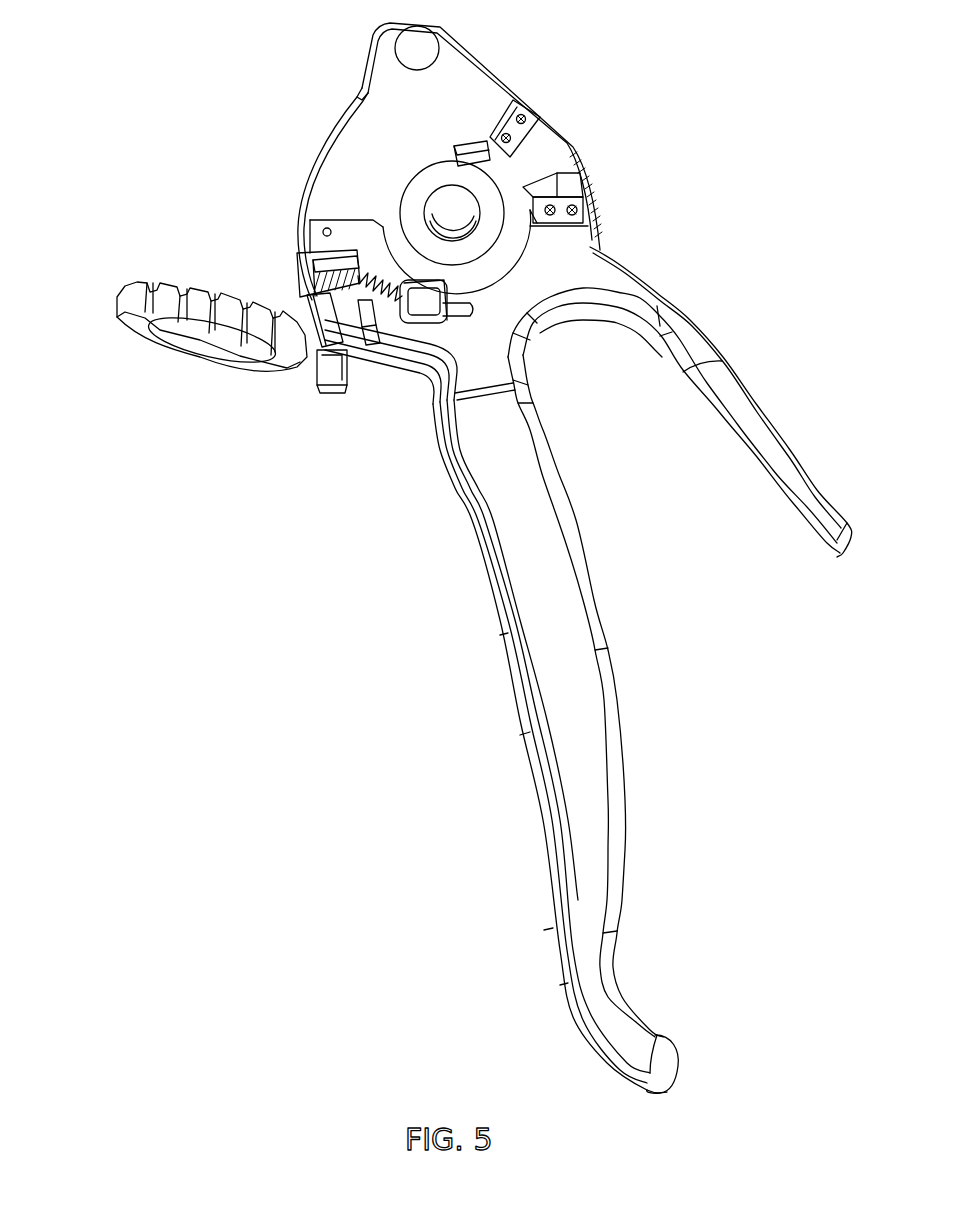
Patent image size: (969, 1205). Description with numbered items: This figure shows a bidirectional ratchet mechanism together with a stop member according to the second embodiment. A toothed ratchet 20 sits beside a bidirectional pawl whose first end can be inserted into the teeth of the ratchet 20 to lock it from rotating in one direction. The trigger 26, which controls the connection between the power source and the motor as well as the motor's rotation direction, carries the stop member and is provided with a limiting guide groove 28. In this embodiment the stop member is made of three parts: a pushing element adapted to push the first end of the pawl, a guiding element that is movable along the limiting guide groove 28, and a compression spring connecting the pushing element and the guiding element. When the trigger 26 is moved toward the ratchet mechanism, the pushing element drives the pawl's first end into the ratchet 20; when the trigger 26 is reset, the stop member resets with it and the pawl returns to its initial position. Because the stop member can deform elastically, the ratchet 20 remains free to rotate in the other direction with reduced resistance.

The ratchet 20 is at (125, 303).
The trigger 26 is at (566, 270).
The limiting guide groove 28 is at (473, 313).